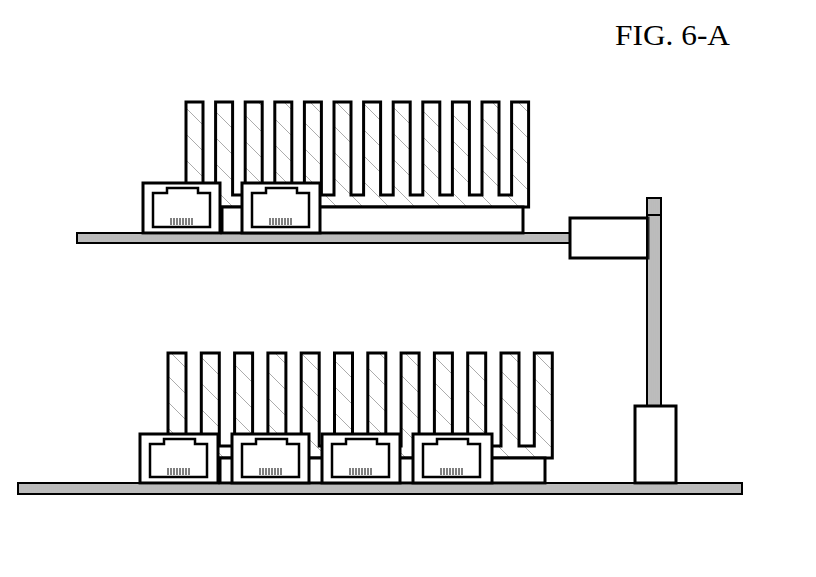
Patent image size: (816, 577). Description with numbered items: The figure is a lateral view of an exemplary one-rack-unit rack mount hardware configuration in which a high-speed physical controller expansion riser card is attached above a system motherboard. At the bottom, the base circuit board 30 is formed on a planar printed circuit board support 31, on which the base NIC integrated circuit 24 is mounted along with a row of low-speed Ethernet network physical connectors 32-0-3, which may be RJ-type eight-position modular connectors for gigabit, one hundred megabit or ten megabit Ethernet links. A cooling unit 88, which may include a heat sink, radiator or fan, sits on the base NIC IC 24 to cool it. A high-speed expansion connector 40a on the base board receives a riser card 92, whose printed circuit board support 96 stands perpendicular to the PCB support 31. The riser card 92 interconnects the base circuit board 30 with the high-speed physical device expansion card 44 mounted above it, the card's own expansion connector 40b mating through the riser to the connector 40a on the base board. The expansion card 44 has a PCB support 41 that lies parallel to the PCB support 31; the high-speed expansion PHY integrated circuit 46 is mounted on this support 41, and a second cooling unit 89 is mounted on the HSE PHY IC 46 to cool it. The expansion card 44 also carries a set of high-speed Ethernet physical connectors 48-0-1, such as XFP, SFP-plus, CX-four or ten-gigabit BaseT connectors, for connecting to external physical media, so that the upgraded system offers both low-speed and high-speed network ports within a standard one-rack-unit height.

The high-speed physical device expansion card 44 is at (318, 169).
The high-speed Ethernet physical connectors 48-0-1 is at (120, 198).
The cooling unit 89 is at (460, 102).
The high-speed expansion physical processor device integrated circuit 46 is at (525, 217).
The PCB support 41 is at (325, 245).
The expansion connector 40b is at (599, 197).
The printed circuit board support 96 is at (654, 197).
The riser card 92 is at (680, 310).
The high-speed expansion connector 40a is at (677, 467).
The cooling unit 88 is at (477, 353).
The base NIC integrated circuit 24 is at (547, 470).
The low-speed Ethernet network physical connectors 32-0-3 is at (120, 463).
The planar printed circuit board support 31 is at (375, 494).
The base circuit board 30 is at (380, 425).